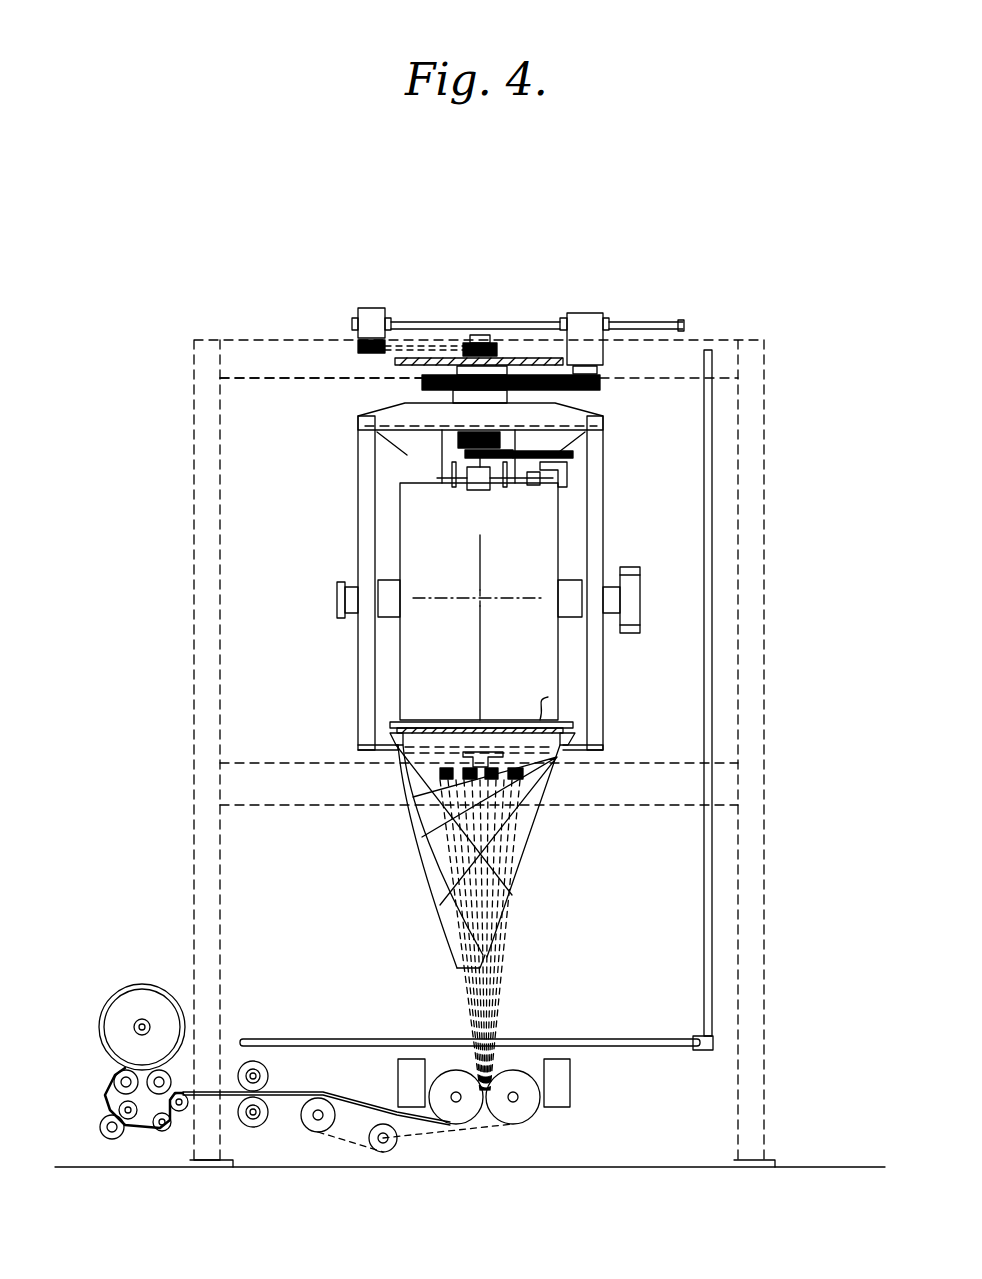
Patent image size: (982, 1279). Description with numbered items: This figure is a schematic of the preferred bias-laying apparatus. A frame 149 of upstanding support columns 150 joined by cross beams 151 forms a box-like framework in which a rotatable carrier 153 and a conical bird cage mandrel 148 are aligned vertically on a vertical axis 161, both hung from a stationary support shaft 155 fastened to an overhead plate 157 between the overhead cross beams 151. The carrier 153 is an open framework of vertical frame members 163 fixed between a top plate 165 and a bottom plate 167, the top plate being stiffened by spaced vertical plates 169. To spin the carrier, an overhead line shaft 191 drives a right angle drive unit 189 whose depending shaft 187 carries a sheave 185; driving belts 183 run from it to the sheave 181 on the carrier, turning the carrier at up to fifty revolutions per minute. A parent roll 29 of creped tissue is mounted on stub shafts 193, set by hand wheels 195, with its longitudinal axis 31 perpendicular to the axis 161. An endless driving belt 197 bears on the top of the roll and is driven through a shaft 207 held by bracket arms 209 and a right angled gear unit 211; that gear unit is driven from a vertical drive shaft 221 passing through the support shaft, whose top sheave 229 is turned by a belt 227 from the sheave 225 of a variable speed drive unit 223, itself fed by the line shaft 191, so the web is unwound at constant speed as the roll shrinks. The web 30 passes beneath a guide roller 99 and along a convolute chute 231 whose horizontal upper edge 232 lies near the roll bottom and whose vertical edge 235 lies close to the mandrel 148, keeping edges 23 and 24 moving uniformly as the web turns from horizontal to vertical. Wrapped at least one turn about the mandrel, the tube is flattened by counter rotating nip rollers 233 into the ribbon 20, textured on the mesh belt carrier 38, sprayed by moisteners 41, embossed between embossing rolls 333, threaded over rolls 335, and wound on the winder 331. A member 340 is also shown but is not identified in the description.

The ribbon 20 is at (360, 1092).
The web edge 23 is at (575, 737).
The web edge 24 is at (390, 738).
The parent roll 29 is at (400, 548).
The web 30 is at (430, 718).
The longitudinal axis 31 is at (522, 598).
The mesh belt carrier 38 is at (472, 1132).
The moisteners 41 is at (412, 1059).
The guide roller 99 is at (548, 722).
The bird cage mandrel 148 is at (520, 952).
The frame 149 is at (190, 416).
The support columns 150 is at (194, 685).
The cross beams 151 is at (236, 338).
The rotatable carrier 153 is at (458, 576).
The support shaft 155 is at (445, 398).
The overhead plate 157 is at (540, 358).
The vertical axis 161 is at (480, 632).
The vertical frame members 163 is at (358, 654).
The top plate 165 is at (358, 424).
The bottom plate 167 is at (595, 750).
The vertical plates 169 is at (458, 440).
The sheave 181 is at (422, 385).
The driving belts 183 is at (556, 390).
The sheave 185 is at (600, 386).
The shaft 187 is at (585, 366).
The right angle drive unit 189 is at (590, 320).
The line shaft 191 is at (664, 322).
The stub shafts 193 is at (385, 592).
The hand wheels 195 is at (337, 596).
The driving belt 197 is at (480, 490).
The shaft 207 is at (532, 485).
The bracket arms 209 is at (437, 468).
The right angled gear unit 211 is at (573, 456).
The drive shaft 221 is at (472, 322).
The variable speed drive unit 223 is at (372, 308).
The sheave 225 is at (358, 347).
The belt 227 is at (438, 346).
The sheave 229 is at (480, 335).
The chute 231 is at (404, 843).
The upper edge 232 is at (395, 750).
The nip rollers 233 is at (523, 1115).
The vertical edge 235 is at (450, 945).
The winder 331 is at (162, 982).
The embossing rolls 333 is at (268, 1071).
The rolls 335 is at (112, 1122).
The bar 340 is at (662, 1039).